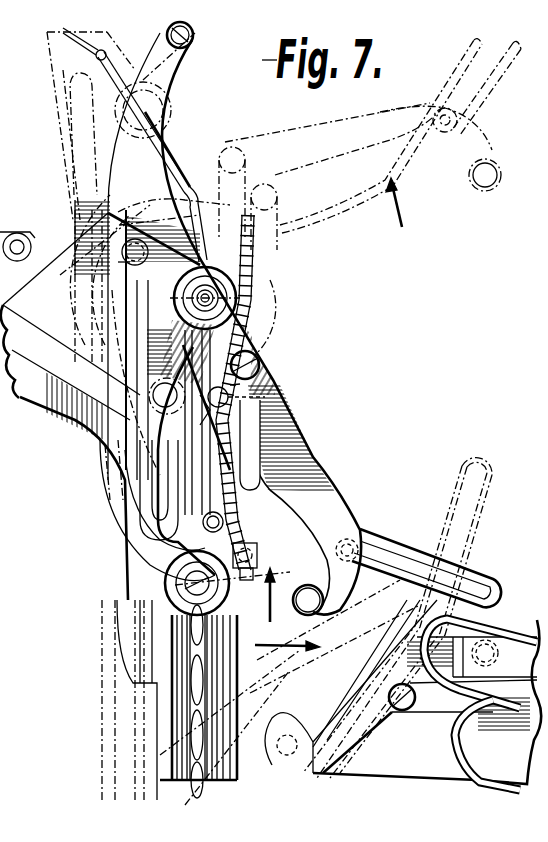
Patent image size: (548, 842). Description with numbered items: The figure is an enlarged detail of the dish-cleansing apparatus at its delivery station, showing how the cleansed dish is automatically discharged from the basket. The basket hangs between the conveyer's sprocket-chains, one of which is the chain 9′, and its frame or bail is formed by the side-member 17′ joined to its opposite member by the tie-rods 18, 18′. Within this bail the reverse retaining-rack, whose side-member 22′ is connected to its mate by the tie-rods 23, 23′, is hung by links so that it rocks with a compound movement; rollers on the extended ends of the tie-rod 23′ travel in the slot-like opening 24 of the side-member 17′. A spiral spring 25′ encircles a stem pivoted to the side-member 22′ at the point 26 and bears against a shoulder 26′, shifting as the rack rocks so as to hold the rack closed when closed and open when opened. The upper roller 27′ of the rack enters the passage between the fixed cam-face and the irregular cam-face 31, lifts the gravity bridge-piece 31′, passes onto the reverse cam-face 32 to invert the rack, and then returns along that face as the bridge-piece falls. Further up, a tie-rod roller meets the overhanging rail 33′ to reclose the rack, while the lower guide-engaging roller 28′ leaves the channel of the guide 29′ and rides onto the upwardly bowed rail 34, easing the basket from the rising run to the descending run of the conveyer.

The sprocket-chain 9′ is at (124, 68).
The tie-rod 18 is at (193, 40).
The side-member 17′ is at (152, 158).
The overhanging rail 33′ is at (75, 212).
The tie-rod 23′ is at (148, 252).
The rail 34 is at (70, 362).
The pivot point 26 is at (232, 392).
The shoulder 26′ is at (253, 410).
The side-member 22′ is at (318, 470).
The slot-like opening 24 is at (150, 523).
The tie-rod 18′ is at (226, 524).
The spiral spring 25′ is at (247, 540).
The tie-rod 23 is at (336, 549).
The guide-engaging roller 28′ is at (229, 592).
The roller 27′ is at (300, 612).
The guide 29′ is at (236, 670).
The reverse cam-face 32 is at (500, 653).
The gravity bridge-piece 31′ is at (420, 697).
The irregular cam-face 31 is at (457, 762).